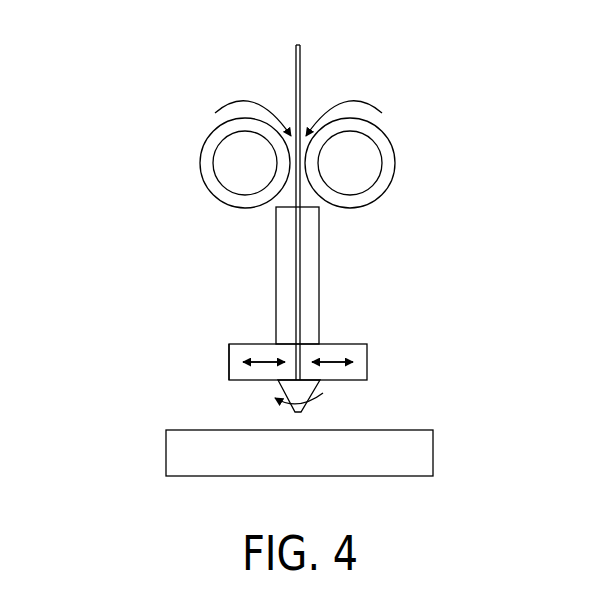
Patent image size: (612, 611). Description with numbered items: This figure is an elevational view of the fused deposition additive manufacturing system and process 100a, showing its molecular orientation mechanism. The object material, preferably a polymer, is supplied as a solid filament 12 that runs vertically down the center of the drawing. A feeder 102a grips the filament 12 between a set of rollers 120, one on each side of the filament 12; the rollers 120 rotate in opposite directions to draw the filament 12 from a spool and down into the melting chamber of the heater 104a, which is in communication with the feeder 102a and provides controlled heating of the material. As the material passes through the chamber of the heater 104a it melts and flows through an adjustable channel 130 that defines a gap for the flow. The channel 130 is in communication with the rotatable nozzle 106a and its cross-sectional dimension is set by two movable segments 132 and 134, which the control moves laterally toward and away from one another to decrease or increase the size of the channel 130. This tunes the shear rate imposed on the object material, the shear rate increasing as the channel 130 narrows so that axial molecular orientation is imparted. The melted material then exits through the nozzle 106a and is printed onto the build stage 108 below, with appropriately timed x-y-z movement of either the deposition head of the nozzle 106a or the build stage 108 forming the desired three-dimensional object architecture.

The filament 12 is at (300, 73).
The fused deposition additive manufacturing system and process 100a is at (383, 76).
The feeder 102a is at (124, 182).
The rollers 120 is at (242, 203).
The heater 104a is at (312, 271).
The adjustable channel 130 is at (300, 313).
The movable segment 134 is at (367, 368).
The movable segment 132 is at (242, 372).
The rotatable nozzle 106a is at (307, 388).
The build stage 108 is at (417, 456).